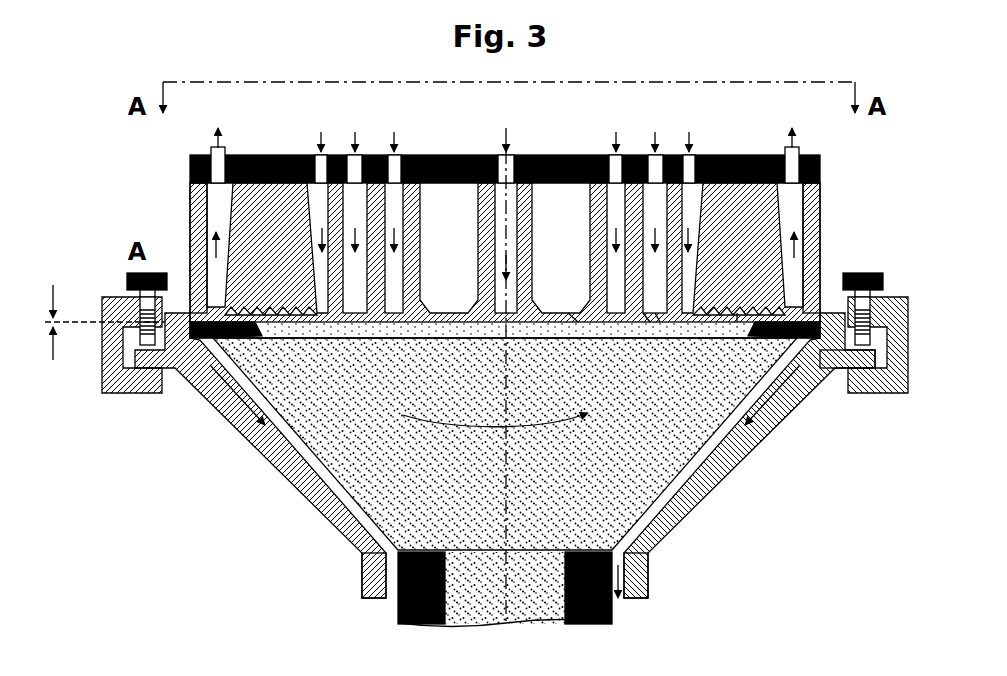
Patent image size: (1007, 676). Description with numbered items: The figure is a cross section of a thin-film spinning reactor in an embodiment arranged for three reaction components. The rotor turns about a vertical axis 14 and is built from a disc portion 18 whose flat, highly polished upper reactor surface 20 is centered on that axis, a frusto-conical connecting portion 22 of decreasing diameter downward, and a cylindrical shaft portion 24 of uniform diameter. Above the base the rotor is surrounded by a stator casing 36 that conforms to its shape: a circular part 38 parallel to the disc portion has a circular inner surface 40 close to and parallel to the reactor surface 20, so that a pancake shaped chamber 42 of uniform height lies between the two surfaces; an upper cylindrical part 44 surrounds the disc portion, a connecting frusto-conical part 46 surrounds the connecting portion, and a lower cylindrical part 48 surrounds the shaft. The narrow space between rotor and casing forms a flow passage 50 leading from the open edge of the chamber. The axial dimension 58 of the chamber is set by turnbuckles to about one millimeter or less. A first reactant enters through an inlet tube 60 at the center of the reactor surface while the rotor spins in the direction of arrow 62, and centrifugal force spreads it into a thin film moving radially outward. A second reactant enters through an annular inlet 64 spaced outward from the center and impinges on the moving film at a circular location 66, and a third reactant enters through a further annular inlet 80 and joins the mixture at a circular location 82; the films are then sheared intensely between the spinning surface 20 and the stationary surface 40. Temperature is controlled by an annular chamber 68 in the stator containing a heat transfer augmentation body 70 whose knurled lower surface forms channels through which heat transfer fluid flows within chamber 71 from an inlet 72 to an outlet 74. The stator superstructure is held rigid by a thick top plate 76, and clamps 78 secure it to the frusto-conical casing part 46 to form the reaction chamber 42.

The vertical axis 14 is at (507, 470).
The disc portion 18 is at (402, 340).
The reactor surface 20 is at (478, 333).
The frusto-conical connecting portion 22 is at (378, 425).
The cylindrical shaft portion 24 is at (397, 568).
The stator casing 36 is at (250, 322).
The circular part of stator casing 38 is at (768, 318).
The circular inner surface 40 is at (737, 322).
The pancake shaped chamber 42 is at (568, 332).
The upper cylindrical part 44 is at (813, 353).
The connecting frusto-conical part 46 is at (672, 518).
The lower cylindrical part 48 is at (363, 588).
The flow passage 50 is at (702, 470).
The axial dimension 58 is at (94, 322).
The inlet tube 60 is at (506, 361).
The arrow 62 is at (511, 414).
The inlet 64 is at (503, 207).
The circular location 66 is at (645, 338).
The annular chamber 68 is at (198, 192).
The heat transfer augmentation body 70 is at (318, 243).
The chamber 71 is at (505, 293).
The inlet 72 is at (501, 211).
The outlet 74 is at (504, 202).
The top plate 76 is at (730, 157).
The clamps 78 is at (148, 385).
The inlet 80 is at (504, 205).
The circular location 82 is at (655, 322).